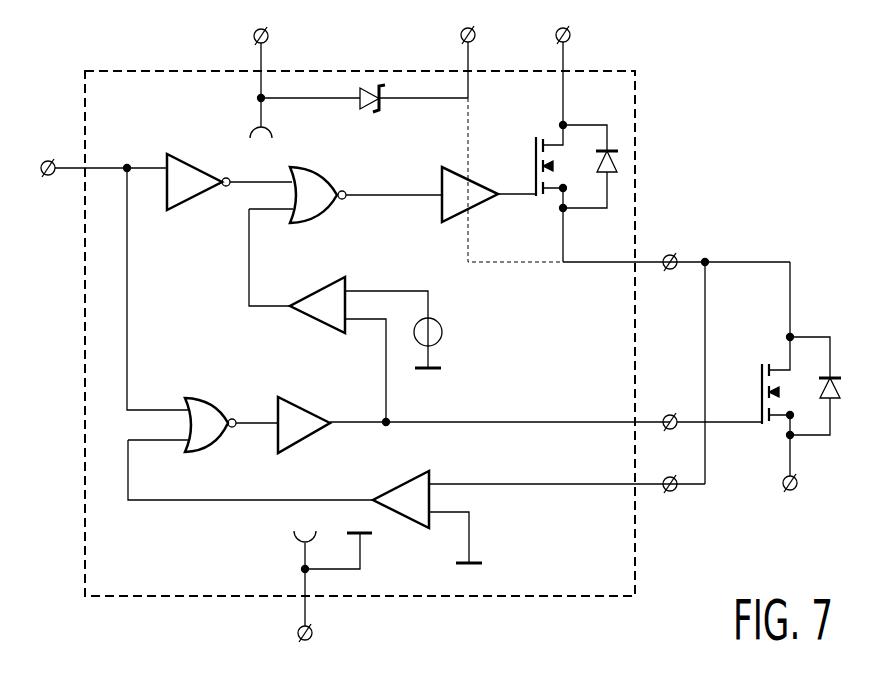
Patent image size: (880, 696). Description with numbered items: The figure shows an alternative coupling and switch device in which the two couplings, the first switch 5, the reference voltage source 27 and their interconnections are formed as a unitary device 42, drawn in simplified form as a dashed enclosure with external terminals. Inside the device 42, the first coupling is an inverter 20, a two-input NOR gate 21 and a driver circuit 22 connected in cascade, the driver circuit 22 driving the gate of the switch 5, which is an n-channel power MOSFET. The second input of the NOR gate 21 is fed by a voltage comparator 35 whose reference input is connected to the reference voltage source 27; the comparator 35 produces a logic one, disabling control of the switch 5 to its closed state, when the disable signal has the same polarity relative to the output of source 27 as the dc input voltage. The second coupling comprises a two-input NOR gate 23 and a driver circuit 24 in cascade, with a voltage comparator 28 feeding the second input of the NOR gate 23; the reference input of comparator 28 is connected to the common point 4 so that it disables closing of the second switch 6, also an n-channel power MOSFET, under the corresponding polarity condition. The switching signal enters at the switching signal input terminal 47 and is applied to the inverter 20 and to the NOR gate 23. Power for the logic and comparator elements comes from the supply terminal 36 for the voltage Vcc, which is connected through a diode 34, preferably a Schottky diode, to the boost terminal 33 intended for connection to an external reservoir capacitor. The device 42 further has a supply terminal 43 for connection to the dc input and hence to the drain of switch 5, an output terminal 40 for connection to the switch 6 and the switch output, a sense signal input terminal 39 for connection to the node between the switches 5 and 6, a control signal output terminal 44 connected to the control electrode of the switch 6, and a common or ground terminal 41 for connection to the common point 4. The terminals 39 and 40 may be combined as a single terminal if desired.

The unitary device 42 is at (144, 68).
The switching signal input terminal 47 is at (49, 160).
The inverter 20 is at (193, 160).
The two-input NOR gate 21 is at (342, 216).
The driver circuit 22 is at (443, 162).
The supply terminal 36 is at (253, 36).
The diode 34 is at (367, 115).
The boost terminal 33 is at (460, 36).
The further supply terminal 43 is at (571, 35).
The switch 5 is at (518, 155).
The voltage comparator 35 is at (312, 290).
The reference voltage source 27 is at (443, 331).
The two-input NOR gate 23 is at (210, 397).
The driver circuit 24 is at (296, 395).
The voltage comparator 28 is at (390, 486).
The common or ground terminal 41 is at (296, 633).
The further output terminal 40 is at (671, 254).
The switch 6 is at (750, 372).
The control signal output terminal 44 is at (671, 413).
The sense signal input terminal 39 is at (670, 493).
The common point 4 is at (791, 492).